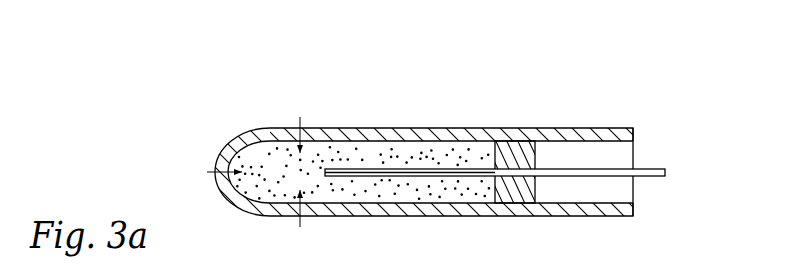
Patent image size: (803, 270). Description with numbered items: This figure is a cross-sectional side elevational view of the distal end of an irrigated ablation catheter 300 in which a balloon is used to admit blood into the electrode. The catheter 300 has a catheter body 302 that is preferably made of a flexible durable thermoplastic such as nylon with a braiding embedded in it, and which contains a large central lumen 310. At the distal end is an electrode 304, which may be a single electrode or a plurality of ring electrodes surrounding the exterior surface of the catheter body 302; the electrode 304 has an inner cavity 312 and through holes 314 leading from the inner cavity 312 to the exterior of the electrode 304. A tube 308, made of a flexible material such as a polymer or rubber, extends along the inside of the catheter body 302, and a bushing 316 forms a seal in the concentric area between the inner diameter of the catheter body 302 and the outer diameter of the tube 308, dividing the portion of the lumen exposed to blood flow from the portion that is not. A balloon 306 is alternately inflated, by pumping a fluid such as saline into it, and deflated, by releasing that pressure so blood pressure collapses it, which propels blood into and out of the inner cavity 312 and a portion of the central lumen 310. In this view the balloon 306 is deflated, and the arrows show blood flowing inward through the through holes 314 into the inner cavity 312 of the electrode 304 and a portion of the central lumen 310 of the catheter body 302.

The catheter 300 is at (418, 58).
The catheter body 302 is at (622, 128).
The electrode 304 is at (236, 207).
The balloon 306 is at (400, 168).
The tube 308 is at (646, 170).
The central lumen 310 is at (620, 187).
The inner cavity 312 is at (232, 139).
The through holes 314 is at (302, 117).
The bushing 316 is at (521, 152).